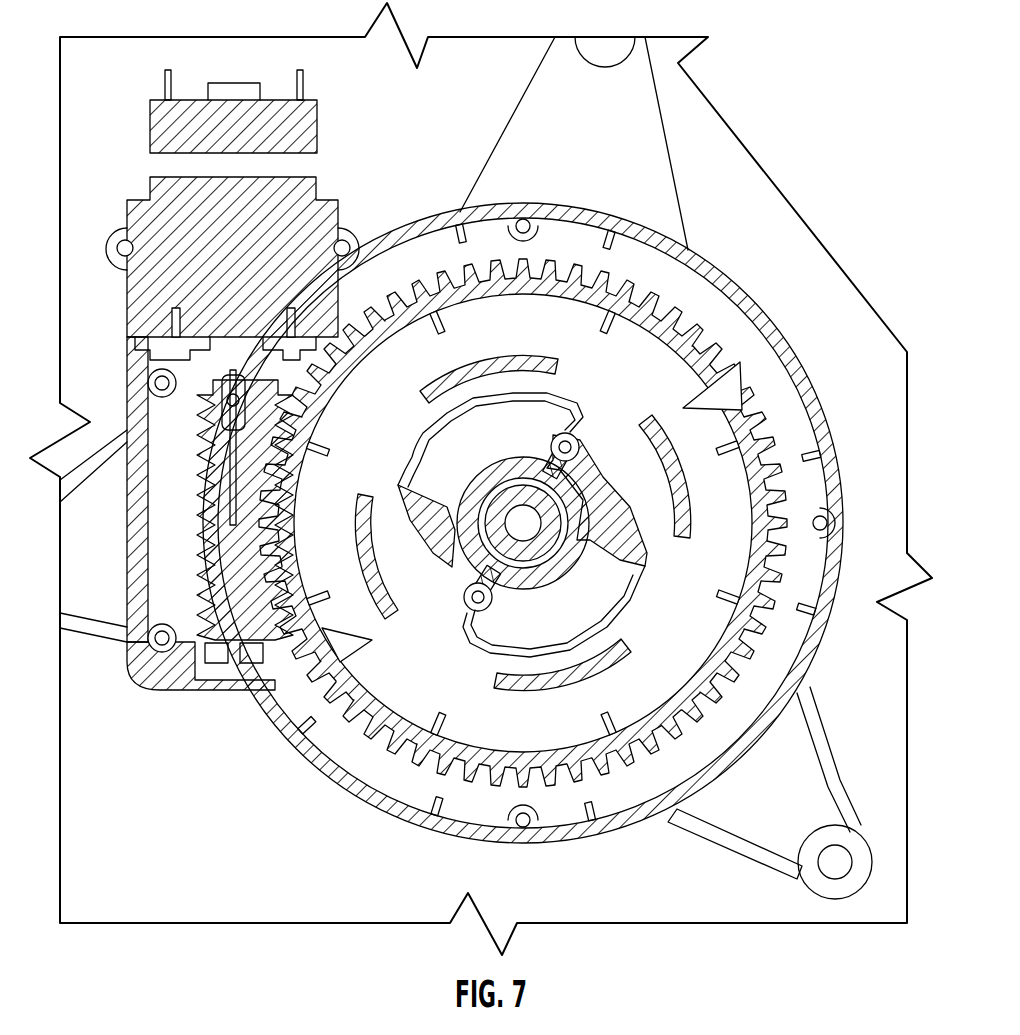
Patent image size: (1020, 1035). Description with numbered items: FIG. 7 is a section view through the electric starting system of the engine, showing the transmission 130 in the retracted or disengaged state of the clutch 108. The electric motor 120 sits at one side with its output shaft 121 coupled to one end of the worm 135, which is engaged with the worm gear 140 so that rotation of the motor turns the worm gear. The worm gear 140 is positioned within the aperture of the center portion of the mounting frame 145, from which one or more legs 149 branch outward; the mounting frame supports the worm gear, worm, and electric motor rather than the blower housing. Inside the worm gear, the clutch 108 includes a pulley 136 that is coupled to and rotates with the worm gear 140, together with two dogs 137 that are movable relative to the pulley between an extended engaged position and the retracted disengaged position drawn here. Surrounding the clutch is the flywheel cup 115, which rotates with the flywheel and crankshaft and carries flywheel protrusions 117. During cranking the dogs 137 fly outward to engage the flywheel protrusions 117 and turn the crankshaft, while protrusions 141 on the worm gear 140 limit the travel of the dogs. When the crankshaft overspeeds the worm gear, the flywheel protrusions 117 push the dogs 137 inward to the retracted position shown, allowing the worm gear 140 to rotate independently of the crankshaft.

The clutch 108 is at (557, 718).
The flywheel cup 115 is at (607, 658).
The flywheel protrusions 117 is at (680, 530).
The electric motor 120 is at (195, 252).
The output shaft 121 is at (232, 352).
The transmission 130 is at (883, 253).
The worm 135 is at (218, 583).
The pulley 136 is at (580, 538).
The dogs 137 is at (603, 487).
The worm gear 140 is at (770, 470).
The protrusions 141 is at (724, 424).
The mounting frame 145 is at (782, 852).
The legs 149 is at (843, 802).